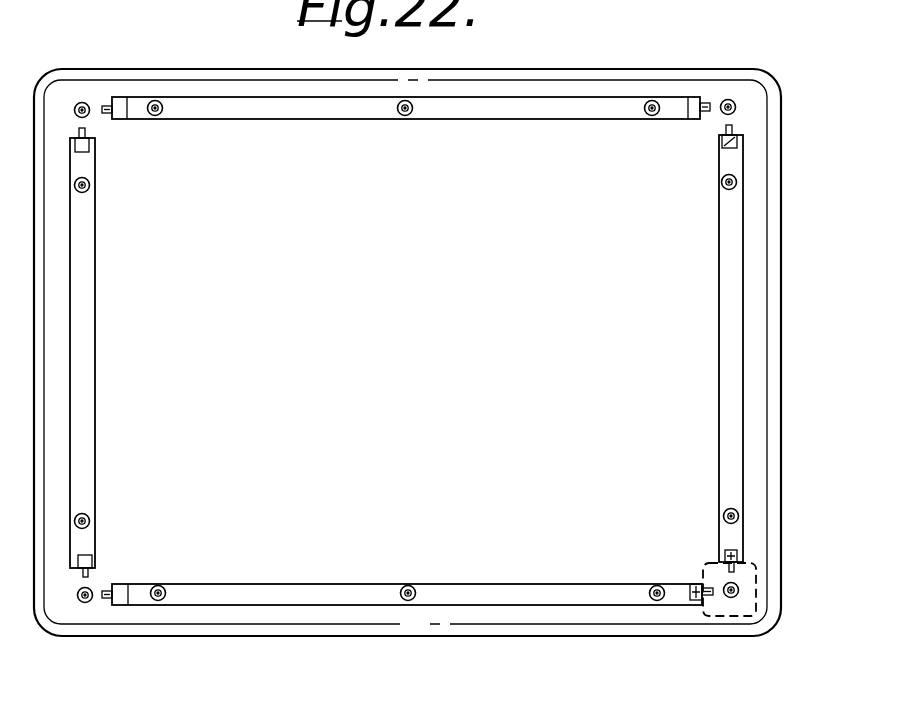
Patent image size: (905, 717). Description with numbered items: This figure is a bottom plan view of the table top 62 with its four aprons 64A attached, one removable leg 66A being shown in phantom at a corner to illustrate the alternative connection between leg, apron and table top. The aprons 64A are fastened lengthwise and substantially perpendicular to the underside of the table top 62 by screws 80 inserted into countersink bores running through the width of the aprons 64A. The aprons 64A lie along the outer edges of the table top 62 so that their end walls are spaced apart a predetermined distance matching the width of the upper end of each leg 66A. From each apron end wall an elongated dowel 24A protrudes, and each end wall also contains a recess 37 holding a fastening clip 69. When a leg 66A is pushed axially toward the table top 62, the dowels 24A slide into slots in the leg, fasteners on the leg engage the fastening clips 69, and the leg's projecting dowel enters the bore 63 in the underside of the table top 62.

The table top 62 is at (63, 613).
The aprons 64A is at (730, 442).
The recess 37 is at (738, 139).
The elongated dowel 24A is at (733, 128).
The bore 63 is at (733, 101).
The fastening clip 69 is at (697, 586).
The removable leg 66A is at (737, 603).
The screws 80 is at (403, 598).